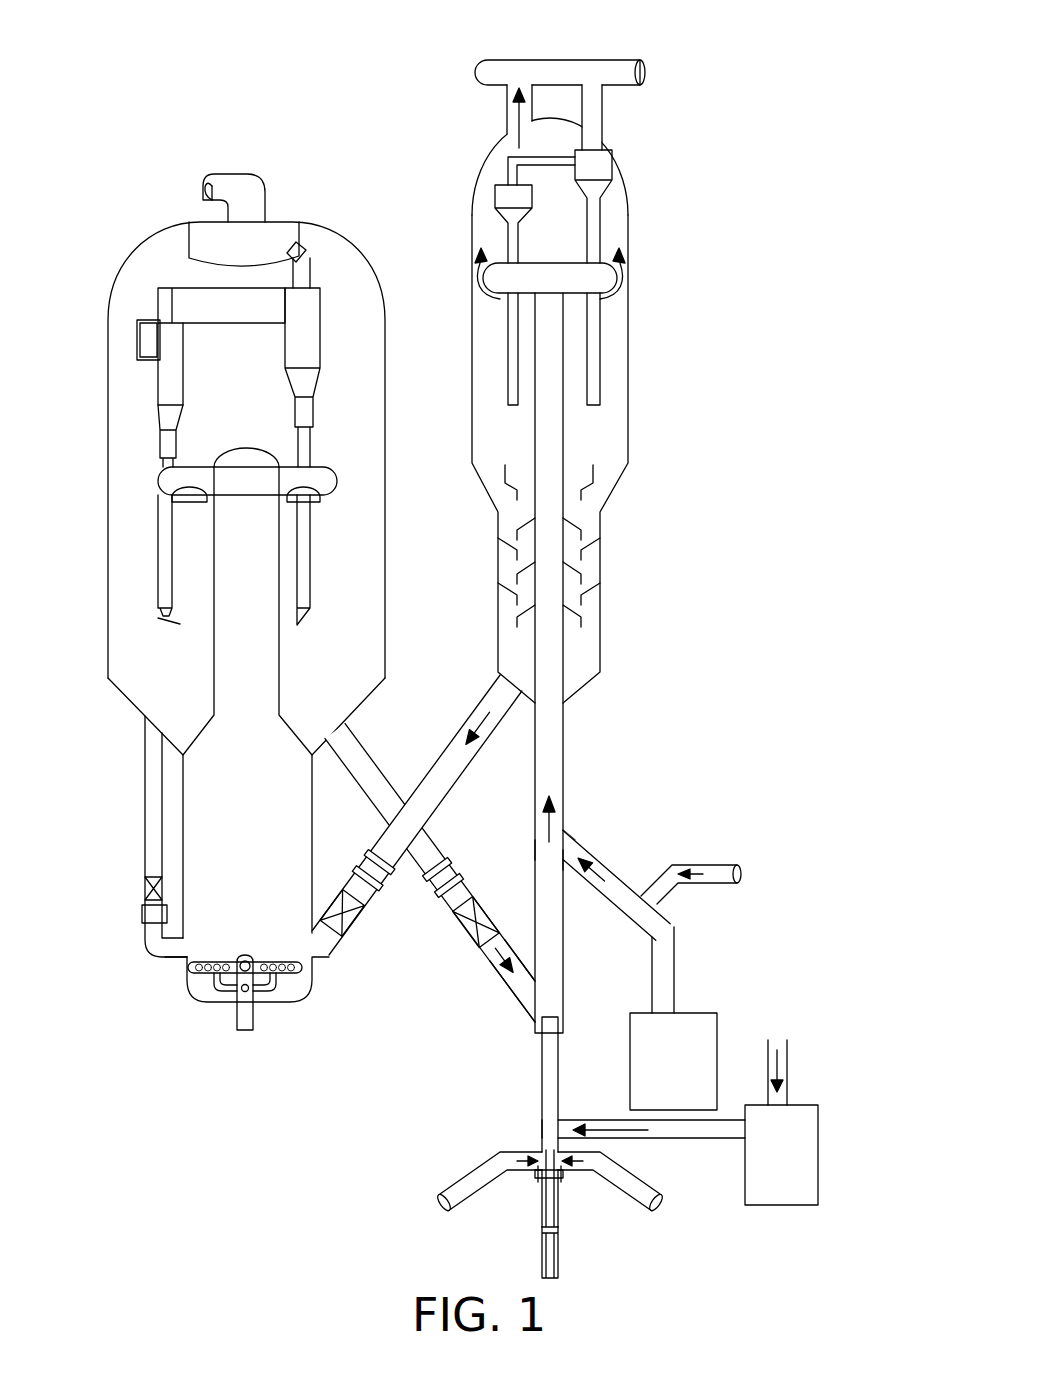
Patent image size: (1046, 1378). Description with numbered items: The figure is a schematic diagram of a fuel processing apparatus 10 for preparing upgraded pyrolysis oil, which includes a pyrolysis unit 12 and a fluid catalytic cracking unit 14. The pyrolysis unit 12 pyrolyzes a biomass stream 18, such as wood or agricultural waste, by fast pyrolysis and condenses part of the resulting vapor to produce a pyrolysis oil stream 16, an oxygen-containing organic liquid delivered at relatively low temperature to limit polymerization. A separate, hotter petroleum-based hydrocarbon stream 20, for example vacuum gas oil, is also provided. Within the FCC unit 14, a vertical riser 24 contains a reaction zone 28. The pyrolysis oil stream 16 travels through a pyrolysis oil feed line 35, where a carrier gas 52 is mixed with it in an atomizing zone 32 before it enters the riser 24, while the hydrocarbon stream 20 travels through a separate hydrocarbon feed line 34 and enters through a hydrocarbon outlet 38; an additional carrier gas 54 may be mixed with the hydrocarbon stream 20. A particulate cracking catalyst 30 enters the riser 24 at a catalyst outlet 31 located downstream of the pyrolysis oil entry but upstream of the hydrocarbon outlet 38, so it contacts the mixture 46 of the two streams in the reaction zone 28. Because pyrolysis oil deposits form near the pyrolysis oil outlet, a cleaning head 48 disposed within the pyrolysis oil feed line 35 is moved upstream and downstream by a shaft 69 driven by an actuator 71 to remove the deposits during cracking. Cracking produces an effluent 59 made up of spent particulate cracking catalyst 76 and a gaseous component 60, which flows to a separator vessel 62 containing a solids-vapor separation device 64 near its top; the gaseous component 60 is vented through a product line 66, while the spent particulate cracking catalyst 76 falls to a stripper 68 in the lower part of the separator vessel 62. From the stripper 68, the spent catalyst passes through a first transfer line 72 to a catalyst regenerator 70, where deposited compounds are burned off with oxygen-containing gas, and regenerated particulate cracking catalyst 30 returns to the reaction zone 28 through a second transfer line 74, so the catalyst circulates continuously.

The fuel processing apparatus 10 is at (766, 71).
The pyrolysis unit 12 is at (822, 1147).
The fluid catalytic cracking (FCC) unit 14 is at (131, 209).
The pyrolysis oil stream 16 is at (603, 1122).
The biomass stream 18 is at (783, 1065).
The hydrocarbon stream 20 is at (605, 872).
The riser 24 is at (567, 742).
The reaction zone 28 is at (549, 851).
The particulate cracking catalyst 30 is at (492, 958).
The catalyst outlet 31 is at (522, 998).
The atomizing zone 32 is at (540, 1116).
The hydrocarbon feed line 34 is at (575, 836).
The pyrolysis oil feed line 35 is at (540, 1062).
The hydrocarbon outlet 38 is at (564, 861).
The mixture 46 is at (548, 818).
The cleaning head 48 is at (548, 1152).
The carrier gas 52 is at (511, 1163).
The additional carrier gas 54 is at (718, 863).
The effluent 59 is at (478, 280).
The gaseous component 60 is at (507, 110).
The separator vessel 62 is at (628, 188).
The solids-vapor separation device 64 is at (508, 208).
The product line 66 is at (560, 62).
The stripper 68 is at (513, 548).
The shaft 69 is at (553, 1218).
The catalyst regenerator 70 is at (108, 410).
The actuator 71 is at (560, 1262).
The first transfer line 72 is at (447, 752).
The second transfer line 74 is at (357, 785).
The spent particulate cracking catalyst 76 is at (493, 702).